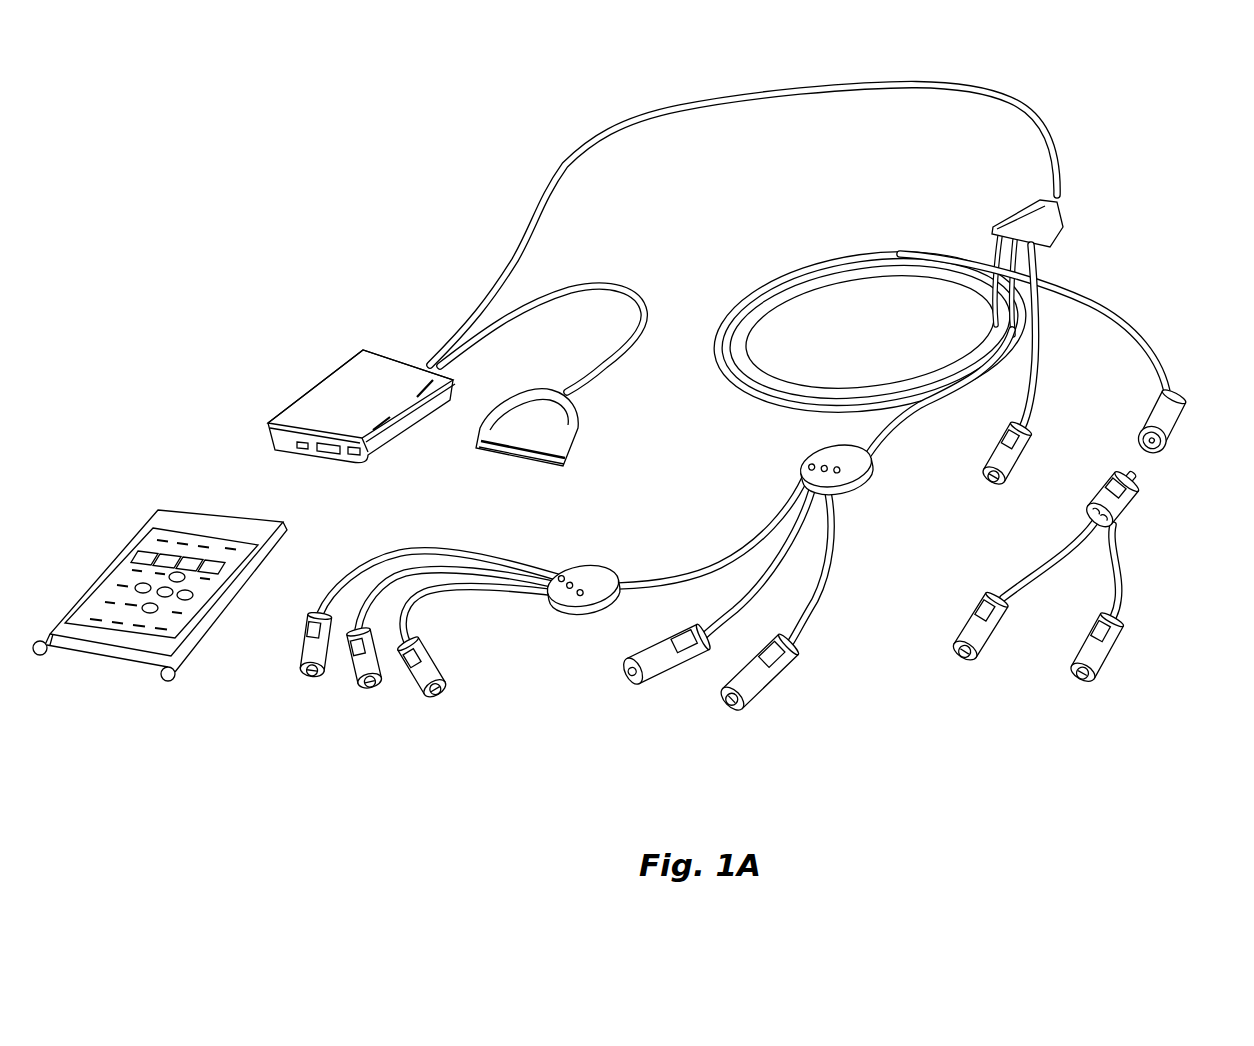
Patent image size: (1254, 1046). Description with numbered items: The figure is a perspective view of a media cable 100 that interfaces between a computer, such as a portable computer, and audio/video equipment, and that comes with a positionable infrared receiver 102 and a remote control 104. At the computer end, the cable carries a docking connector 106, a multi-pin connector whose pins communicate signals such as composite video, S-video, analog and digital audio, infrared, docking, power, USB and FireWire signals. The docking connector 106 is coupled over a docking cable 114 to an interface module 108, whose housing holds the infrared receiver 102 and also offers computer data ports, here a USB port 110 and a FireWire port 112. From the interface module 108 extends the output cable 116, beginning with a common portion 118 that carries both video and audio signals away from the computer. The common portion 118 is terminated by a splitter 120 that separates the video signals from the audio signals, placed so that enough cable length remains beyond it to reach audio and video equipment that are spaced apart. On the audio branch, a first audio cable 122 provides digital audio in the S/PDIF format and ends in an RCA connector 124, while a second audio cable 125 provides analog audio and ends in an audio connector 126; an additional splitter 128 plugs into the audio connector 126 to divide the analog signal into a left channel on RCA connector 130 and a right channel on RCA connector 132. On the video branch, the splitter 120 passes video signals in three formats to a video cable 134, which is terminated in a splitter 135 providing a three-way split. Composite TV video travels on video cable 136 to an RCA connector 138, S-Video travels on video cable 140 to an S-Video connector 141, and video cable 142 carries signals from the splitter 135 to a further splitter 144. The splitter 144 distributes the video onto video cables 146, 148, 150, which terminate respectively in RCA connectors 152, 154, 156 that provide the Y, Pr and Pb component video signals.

The media cable 100 is at (1184, 141).
The infrared receiver 102 is at (301, 452).
The remote control 104 is at (207, 636).
The docking connector 106 is at (588, 437).
The interface module 108 is at (308, 393).
The USB port 110 is at (328, 457).
The FireWire port 112 is at (357, 460).
The docking cable 114 is at (620, 290).
The output cable 116 is at (889, 706).
The common portion 118 is at (668, 124).
The splitter 120 is at (1067, 222).
The first audio cable 122 is at (1037, 380).
The RCA connector 124 is at (1017, 467).
The second audio cable 125 is at (1163, 342).
The audio connector 126 is at (1173, 447).
The splitter 128 is at (1137, 510).
The RCA connector 130 is at (960, 626).
The RCA connector 132 is at (1113, 660).
The video cable 134 is at (893, 432).
The splitter 135 is at (867, 493).
The video cable 136 is at (823, 613).
The RCA connector 138 is at (770, 683).
The video cable 140 is at (720, 615).
The S-Video connector 141 is at (667, 677).
The video cable 142 is at (668, 582).
The splitter 144 is at (588, 562).
The video cable 146 is at (482, 560).
The video cable 148 is at (425, 565).
The video cable 150 is at (437, 583).
The RCA connector 152 is at (333, 665).
The RCA connector 154 is at (385, 667).
The RCA connector 156 is at (440, 667).